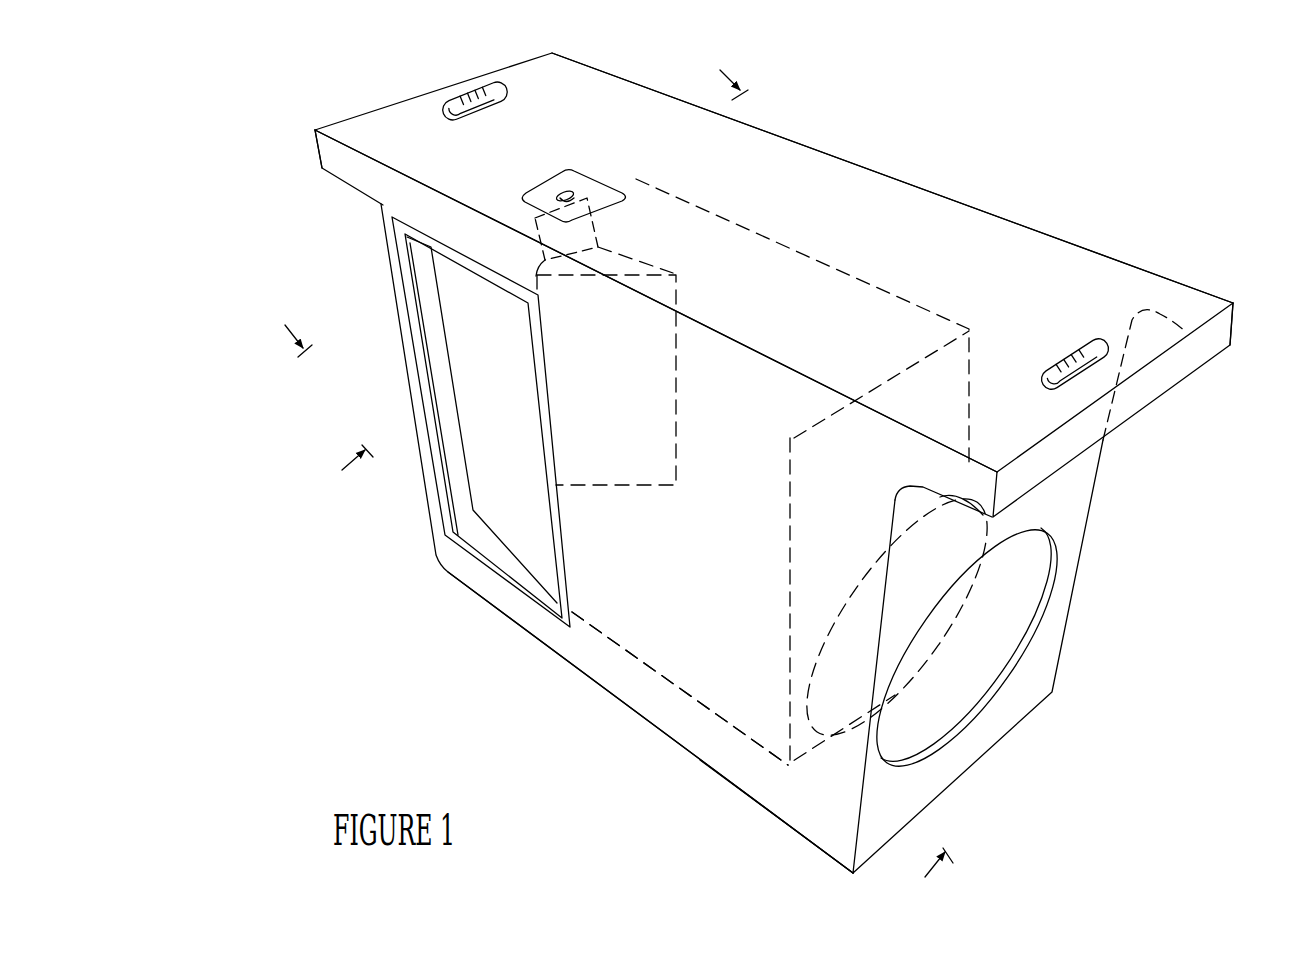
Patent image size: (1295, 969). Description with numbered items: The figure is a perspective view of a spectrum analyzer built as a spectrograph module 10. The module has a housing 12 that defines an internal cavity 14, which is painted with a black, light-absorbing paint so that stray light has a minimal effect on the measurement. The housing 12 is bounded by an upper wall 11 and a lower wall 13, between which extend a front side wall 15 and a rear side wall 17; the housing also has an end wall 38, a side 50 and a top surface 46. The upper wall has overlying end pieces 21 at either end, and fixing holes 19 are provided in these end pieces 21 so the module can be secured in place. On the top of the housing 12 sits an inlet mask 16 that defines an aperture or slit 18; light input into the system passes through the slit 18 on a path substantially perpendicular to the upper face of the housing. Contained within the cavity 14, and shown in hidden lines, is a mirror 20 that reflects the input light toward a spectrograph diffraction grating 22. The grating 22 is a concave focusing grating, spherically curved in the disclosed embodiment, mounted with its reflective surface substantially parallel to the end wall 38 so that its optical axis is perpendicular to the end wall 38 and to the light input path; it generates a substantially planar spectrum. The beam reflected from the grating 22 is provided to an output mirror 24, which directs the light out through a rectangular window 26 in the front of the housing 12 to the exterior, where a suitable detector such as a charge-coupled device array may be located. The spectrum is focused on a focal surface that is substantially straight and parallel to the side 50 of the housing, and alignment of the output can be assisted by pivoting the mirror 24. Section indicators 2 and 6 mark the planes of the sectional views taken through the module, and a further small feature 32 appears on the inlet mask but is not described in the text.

The spectrograph module 10 is at (1142, 137).
The upper wall 11 is at (862, 181).
The housing 12 is at (968, 203).
The lower wall 13 is at (832, 827).
The internal cavity 14 is at (675, 684).
The front side wall 15 is at (693, 565).
The inlet mask 16 is at (530, 187).
The rear side wall 17 is at (1083, 507).
The slit 18 is at (573, 190).
The fixing holes 19 is at (467, 93).
The mirror 20 is at (600, 241).
The overlying end pieces 21 is at (337, 168).
The spectrograph diffraction grating 22 is at (860, 579).
The output mirror 24 is at (628, 470).
The rectangular window 26 is at (503, 568).
The keyhole 32 is at (567, 190).
The end wall 38 is at (1053, 643).
The top surface 46 is at (765, 207).
The side 50 is at (612, 680).
The section line 2- 2 is at (647, 675).
The section line 6- 6 is at (516, 200).